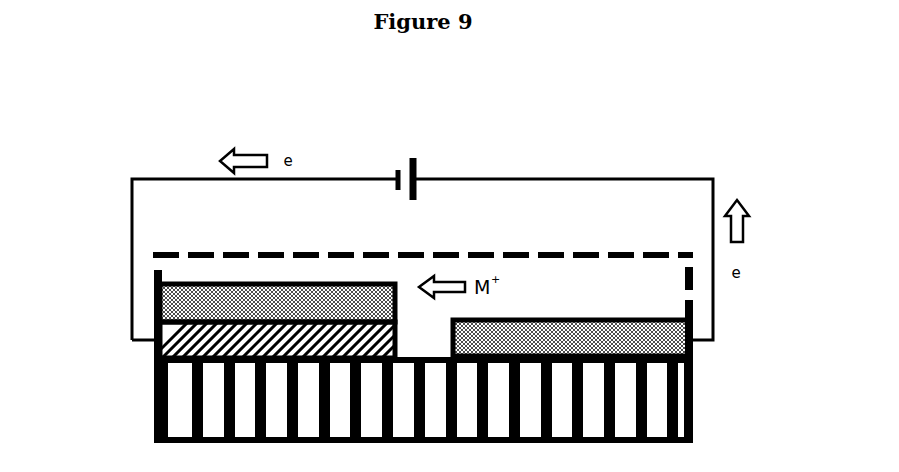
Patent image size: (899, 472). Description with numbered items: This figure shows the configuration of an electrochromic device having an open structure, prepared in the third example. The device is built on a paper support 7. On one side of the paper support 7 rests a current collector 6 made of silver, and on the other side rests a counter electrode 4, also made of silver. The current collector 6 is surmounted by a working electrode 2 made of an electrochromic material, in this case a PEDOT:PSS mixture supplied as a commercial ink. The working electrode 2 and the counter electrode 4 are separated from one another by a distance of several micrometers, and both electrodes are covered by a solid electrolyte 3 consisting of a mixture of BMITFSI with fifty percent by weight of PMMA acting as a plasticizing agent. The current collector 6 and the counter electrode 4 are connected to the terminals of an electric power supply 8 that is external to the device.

The working electrode 2 is at (138, 302).
The solid electrolyte 3 is at (598, 235).
The counter electrode 4 is at (708, 330).
The current collector 6 is at (136, 350).
The paper support 7 is at (703, 398).
The electric power supply 8 is at (418, 144).